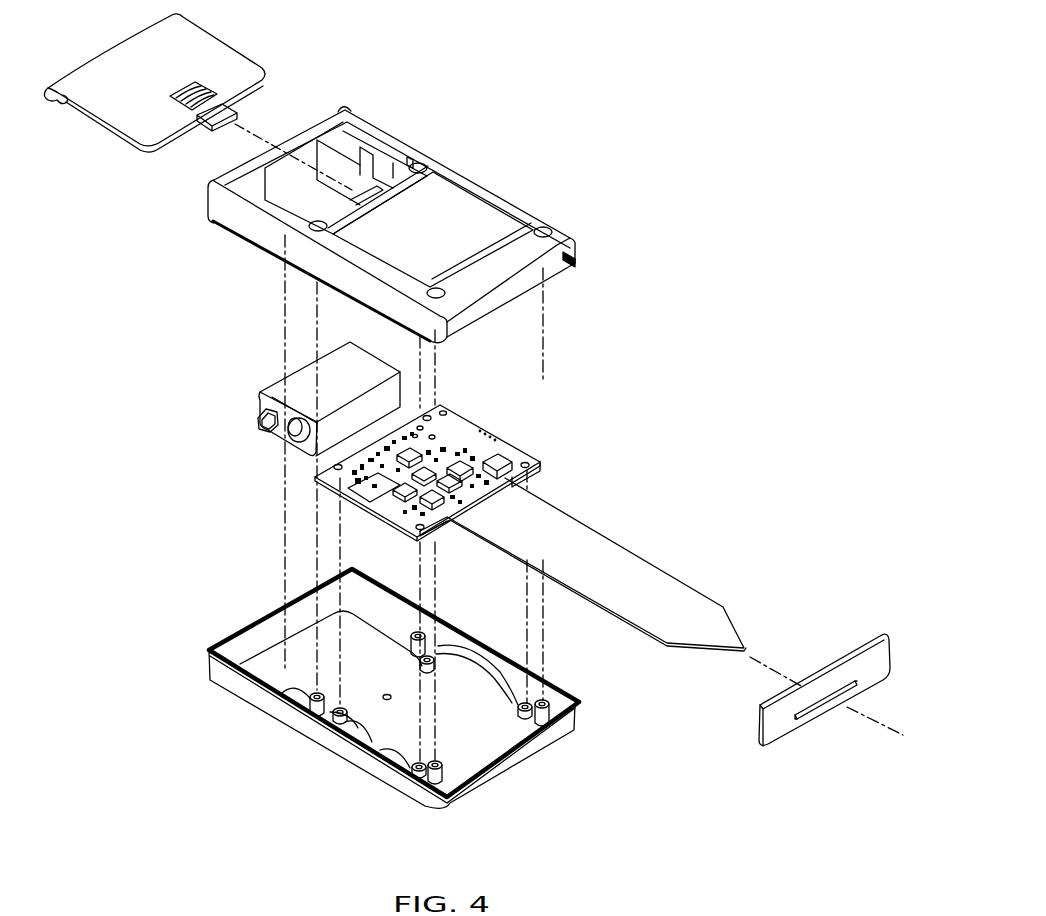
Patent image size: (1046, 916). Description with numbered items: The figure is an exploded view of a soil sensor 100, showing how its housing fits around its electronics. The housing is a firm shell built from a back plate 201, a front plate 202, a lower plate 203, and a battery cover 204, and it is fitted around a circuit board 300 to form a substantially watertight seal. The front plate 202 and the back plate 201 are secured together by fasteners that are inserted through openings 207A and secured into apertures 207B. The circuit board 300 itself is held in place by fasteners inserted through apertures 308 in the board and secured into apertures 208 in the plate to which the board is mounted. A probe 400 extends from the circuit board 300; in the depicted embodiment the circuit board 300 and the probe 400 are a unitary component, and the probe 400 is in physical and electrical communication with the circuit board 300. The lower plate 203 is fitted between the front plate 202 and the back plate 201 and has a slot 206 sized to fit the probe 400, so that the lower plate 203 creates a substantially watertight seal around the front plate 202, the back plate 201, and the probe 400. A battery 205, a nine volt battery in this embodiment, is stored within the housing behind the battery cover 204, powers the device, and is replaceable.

The soil sensor 100 is at (592, 92).
The back plate 201 is at (487, 215).
The front plate 202 is at (273, 655).
The lower plate 203 is at (878, 652).
The battery cover 204 is at (212, 52).
The battery 205 is at (292, 388).
The slot 206 is at (858, 686).
The openings 207A is at (424, 165).
The apertures 207B is at (412, 637).
The apertures 208 is at (517, 660).
The circuit board 300 is at (515, 453).
The apertures 308 is at (432, 414).
The probe 400 is at (672, 588).